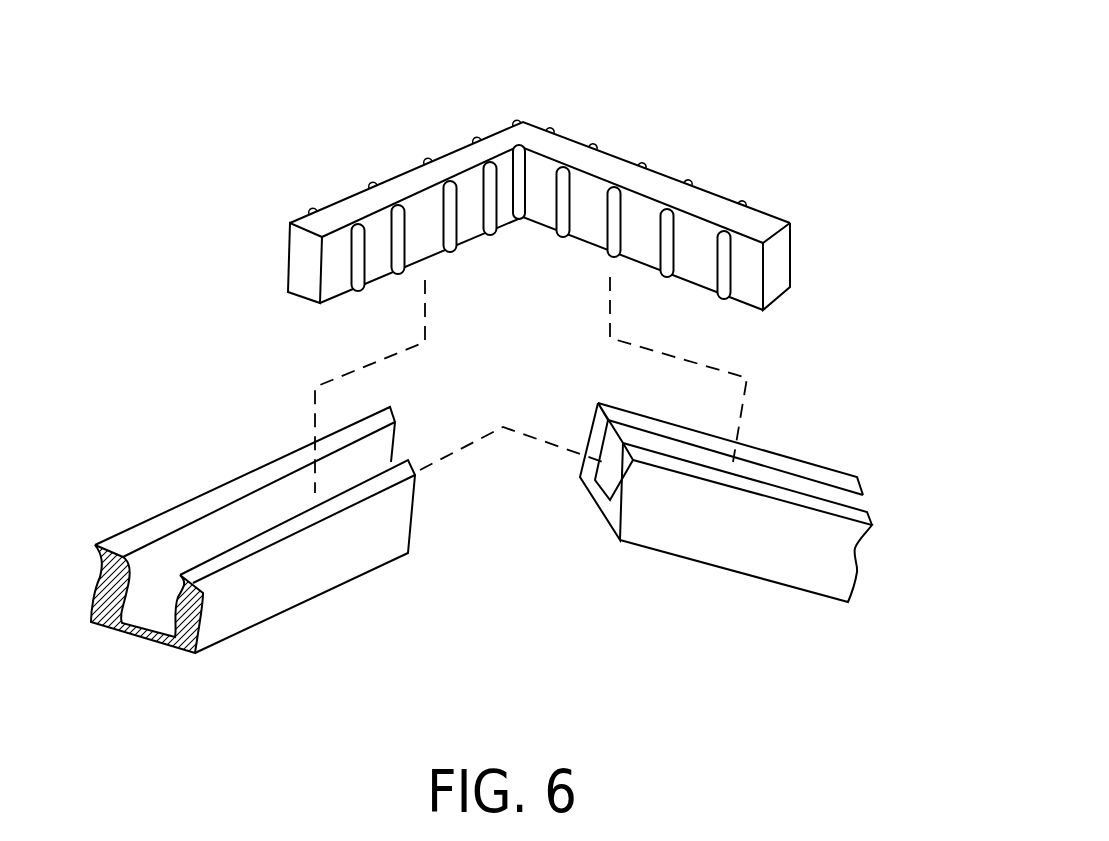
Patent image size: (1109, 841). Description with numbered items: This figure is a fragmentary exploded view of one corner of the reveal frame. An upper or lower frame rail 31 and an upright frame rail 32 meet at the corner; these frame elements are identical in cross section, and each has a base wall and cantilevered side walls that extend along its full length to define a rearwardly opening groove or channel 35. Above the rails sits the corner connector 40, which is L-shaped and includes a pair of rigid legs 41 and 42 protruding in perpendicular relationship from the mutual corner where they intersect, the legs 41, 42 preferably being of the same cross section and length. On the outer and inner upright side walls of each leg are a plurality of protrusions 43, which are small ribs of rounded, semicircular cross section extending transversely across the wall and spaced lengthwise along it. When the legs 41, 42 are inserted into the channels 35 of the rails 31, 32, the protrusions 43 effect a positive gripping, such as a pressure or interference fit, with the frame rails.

The upper and lower frame rails 31 is at (762, 552).
The upright frame rails 32 is at (262, 530).
The groove or channel 35 is at (155, 547).
The corner connector 40 is at (572, 194).
The leg 41 is at (745, 222).
The leg 42 is at (410, 180).
The protrusions 43 is at (373, 185).